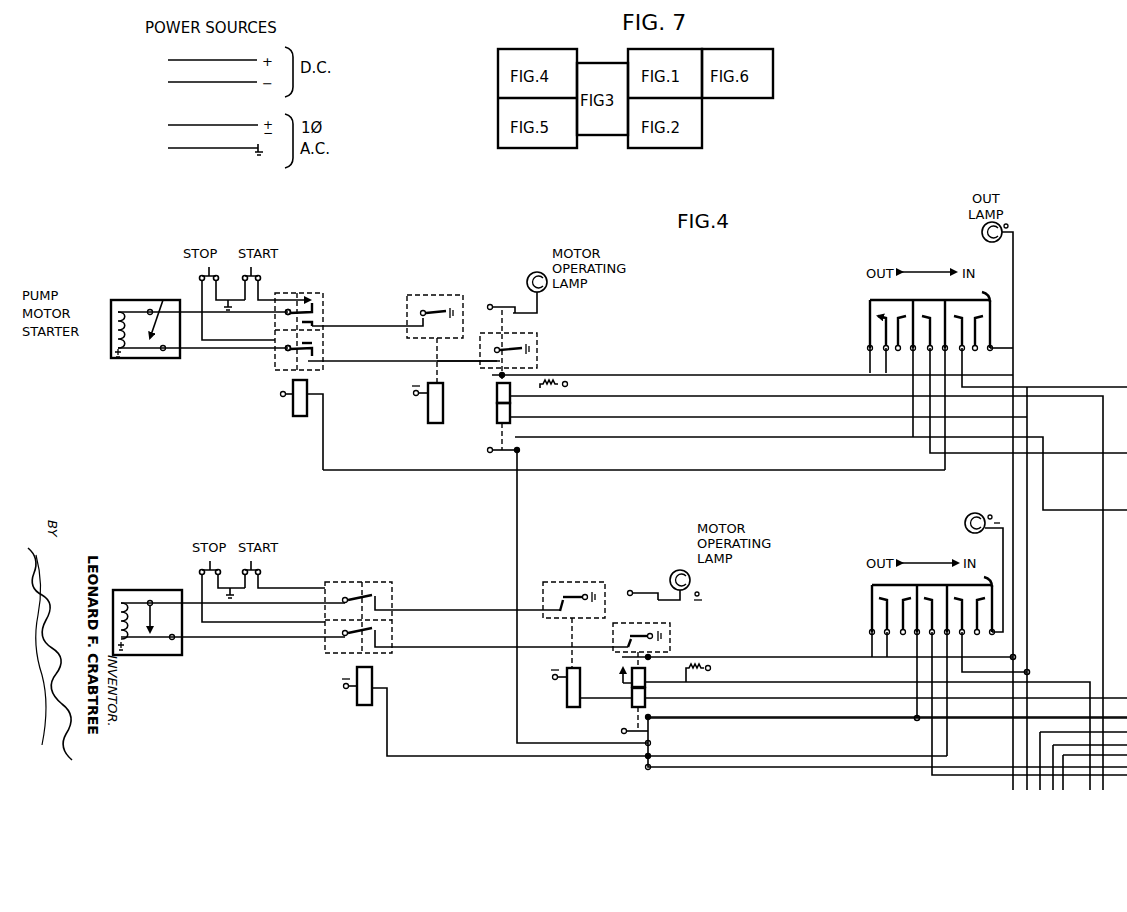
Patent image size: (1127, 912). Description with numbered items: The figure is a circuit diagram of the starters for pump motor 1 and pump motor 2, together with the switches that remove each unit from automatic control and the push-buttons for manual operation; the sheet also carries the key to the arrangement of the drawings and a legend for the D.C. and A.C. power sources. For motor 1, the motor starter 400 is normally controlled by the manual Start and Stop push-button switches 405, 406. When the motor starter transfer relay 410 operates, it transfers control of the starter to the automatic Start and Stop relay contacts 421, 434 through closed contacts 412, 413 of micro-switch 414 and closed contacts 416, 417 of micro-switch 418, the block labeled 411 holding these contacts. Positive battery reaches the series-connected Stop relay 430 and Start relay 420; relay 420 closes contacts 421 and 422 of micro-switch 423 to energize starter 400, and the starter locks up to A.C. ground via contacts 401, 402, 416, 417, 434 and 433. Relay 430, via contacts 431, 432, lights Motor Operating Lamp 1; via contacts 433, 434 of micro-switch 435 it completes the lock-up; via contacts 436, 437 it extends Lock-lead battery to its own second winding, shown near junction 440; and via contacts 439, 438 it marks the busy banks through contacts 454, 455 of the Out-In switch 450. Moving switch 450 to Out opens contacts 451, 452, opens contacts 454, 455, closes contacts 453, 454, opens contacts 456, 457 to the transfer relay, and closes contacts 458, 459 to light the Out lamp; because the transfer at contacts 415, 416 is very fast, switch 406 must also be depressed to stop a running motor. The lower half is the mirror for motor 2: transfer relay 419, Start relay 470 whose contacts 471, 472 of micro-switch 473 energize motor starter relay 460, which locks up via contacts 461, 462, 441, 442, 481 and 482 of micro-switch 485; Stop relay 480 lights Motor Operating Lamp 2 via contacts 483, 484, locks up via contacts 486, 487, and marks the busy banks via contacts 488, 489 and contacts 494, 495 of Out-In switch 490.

The pump motor number 1 / Motor Operating Lamp 1 is at (111, 300).
The pump motor 2 / Motor Operating Lamp 2 is at (146, 590).
The motor starter 400 is at (106, 335).
The contact 401 is at (163, 304).
The contact 402 is at (155, 356).
The Start push-button switch 405 is at (259, 270).
The Stop push-button switch 406 is at (198, 278).
The motor starter transfer relay 410 is at (293, 409).
The relay contact block 411 is at (303, 323).
The contact 412 is at (287, 316).
The contact 413 is at (316, 321).
The micro-switch 414 is at (316, 304).
The contact 415 is at (314, 345).
The contact 416 is at (286, 349).
The contact 417 is at (310, 360).
The micro-switch 418 is at (288, 372).
The motor starter transfer relay 419 is at (357, 706).
The Start relay 420 is at (428, 408).
The contact 421 is at (418, 326).
The contact 422 is at (440, 312).
The micro-switch 423 is at (423, 304).
The Stop relay 430 is at (497, 408).
The contact 431 is at (498, 306).
The contact 432 is at (528, 320).
The contact 433 is at (500, 336).
The contact 434 is at (484, 361).
The micro-switch 435 is at (536, 351).
The contact 436 is at (752, 385).
The contact 437 is at (490, 385).
The contact 438 is at (821, 465).
The contact 439 is at (506, 432).
The conductor junction 440 is at (522, 452).
The contact 441 is at (332, 653).
The contact 442 is at (378, 645).
The Out-In key switch 450 is at (973, 376).
The contact 451 is at (869, 306).
The contact 452 is at (880, 318).
The contact 453 is at (910, 318).
The contact 454 is at (897, 330).
The contact 455 is at (913, 365).
The contact 456 is at (946, 375).
The contact 457 is at (992, 347).
The contact 458 is at (980, 328).
The contact 459 is at (992, 313).
The motor starter relay 460 is at (138, 630).
The contact 461 is at (166, 617).
The contact 462 is at (156, 648).
The Start relay 470 is at (567, 692).
The contact 471 is at (565, 614).
The contact 472 is at (567, 592).
The micro-switch 473 is at (554, 582).
The Stop relay 480 is at (632, 692).
The contact 481 is at (628, 645).
The contact 482 is at (632, 627).
The contact 483 is at (648, 590).
The contact 484 is at (658, 600).
The micro-switch 485 is at (669, 639).
The contact 486 is at (644, 656).
The contact 487 is at (611, 669).
The contact 488 is at (651, 719).
The contact 489 is at (634, 728).
The Out-In switch 490 is at (991, 671).
The contact 494 is at (903, 642).
The contact 495 is at (932, 642).